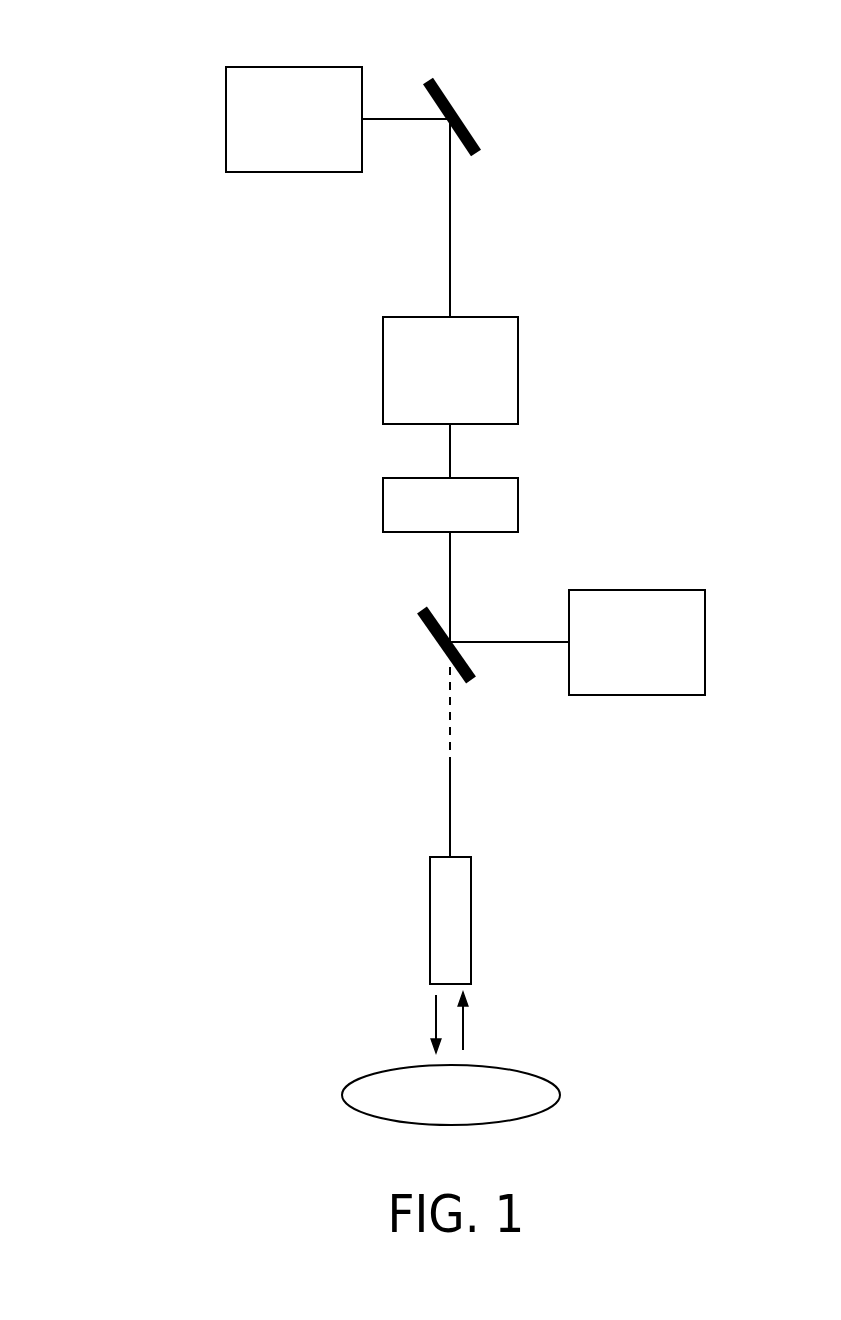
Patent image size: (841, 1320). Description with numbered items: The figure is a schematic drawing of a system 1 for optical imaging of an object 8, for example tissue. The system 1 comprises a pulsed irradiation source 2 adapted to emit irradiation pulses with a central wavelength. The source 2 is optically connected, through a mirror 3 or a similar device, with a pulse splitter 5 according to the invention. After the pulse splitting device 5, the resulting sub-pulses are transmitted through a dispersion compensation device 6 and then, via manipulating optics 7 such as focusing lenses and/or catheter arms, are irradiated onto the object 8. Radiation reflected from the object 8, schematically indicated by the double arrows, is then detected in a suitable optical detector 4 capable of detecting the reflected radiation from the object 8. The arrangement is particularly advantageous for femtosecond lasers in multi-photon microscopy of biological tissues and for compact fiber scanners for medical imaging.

The system 1 is at (137, 69).
The pulsed irradiation source 2 is at (266, 173).
The mirror 3 is at (478, 130).
The optical detector 4 is at (645, 697).
The pulse splitter 5 is at (518, 367).
The dispersion compensation device 6 is at (518, 505).
The manipulating optics 7 is at (472, 906).
The object 8 is at (560, 1090).